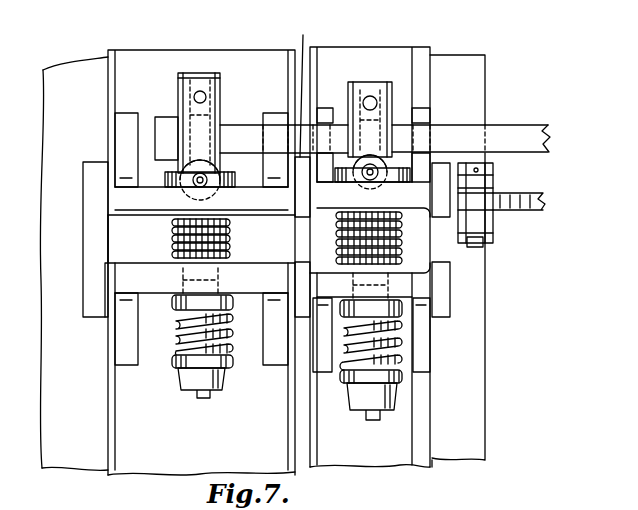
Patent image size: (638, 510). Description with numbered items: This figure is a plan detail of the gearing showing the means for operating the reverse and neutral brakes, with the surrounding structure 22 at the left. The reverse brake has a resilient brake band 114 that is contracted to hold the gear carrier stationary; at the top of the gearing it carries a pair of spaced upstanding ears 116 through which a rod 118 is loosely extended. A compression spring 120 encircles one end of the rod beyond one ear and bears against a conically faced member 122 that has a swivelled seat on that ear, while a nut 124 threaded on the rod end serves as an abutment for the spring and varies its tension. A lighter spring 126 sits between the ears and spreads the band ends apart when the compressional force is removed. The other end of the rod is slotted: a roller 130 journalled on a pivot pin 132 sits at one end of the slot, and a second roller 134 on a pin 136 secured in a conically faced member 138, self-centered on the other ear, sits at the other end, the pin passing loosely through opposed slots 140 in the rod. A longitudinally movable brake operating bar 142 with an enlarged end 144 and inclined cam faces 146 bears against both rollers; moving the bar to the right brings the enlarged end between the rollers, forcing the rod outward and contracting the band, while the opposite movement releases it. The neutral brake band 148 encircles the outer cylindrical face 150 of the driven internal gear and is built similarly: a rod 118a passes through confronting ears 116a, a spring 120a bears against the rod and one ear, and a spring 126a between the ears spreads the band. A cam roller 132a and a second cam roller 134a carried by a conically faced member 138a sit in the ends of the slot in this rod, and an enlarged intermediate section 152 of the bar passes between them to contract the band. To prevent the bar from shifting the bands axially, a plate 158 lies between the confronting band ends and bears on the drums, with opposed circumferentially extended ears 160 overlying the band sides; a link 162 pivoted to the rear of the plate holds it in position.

The frame wall 22 is at (100, 452).
The brake band 114 is at (233, 53).
The ears 116 is at (125, 198).
The ears 116a is at (418, 194).
The rod 118 is at (178, 78).
The rod 118a is at (367, 140).
The compression spring 120 is at (173, 338).
The spring 120a is at (397, 345).
The conically faced member 122 is at (172, 297).
The nut 124 is at (185, 375).
The lighter spring 126 is at (170, 237).
The spring 126a is at (403, 245).
The roller 130 is at (220, 79).
The pivot pin 132 is at (200, 90).
The cam roller 132a is at (363, 82).
The second roller 134 is at (217, 165).
The second cam roller 134a is at (383, 152).
The pin 136 is at (182, 174).
The conically faced member 138 is at (208, 188).
The conically faced member 138a is at (372, 152).
The opposed slots 140 is at (217, 170).
The brake operating bar 142 is at (527, 130).
The enlarged end 144 is at (163, 128).
The inclined cam faces 146 is at (222, 122).
The neutral brake band 148 is at (387, 450).
The outer cylindrical face 150 is at (453, 443).
The enlarged intermediate section 152 is at (418, 118).
The plate 158 is at (123, 227).
The ears 160 is at (266, 402).
The link 162 is at (535, 208).